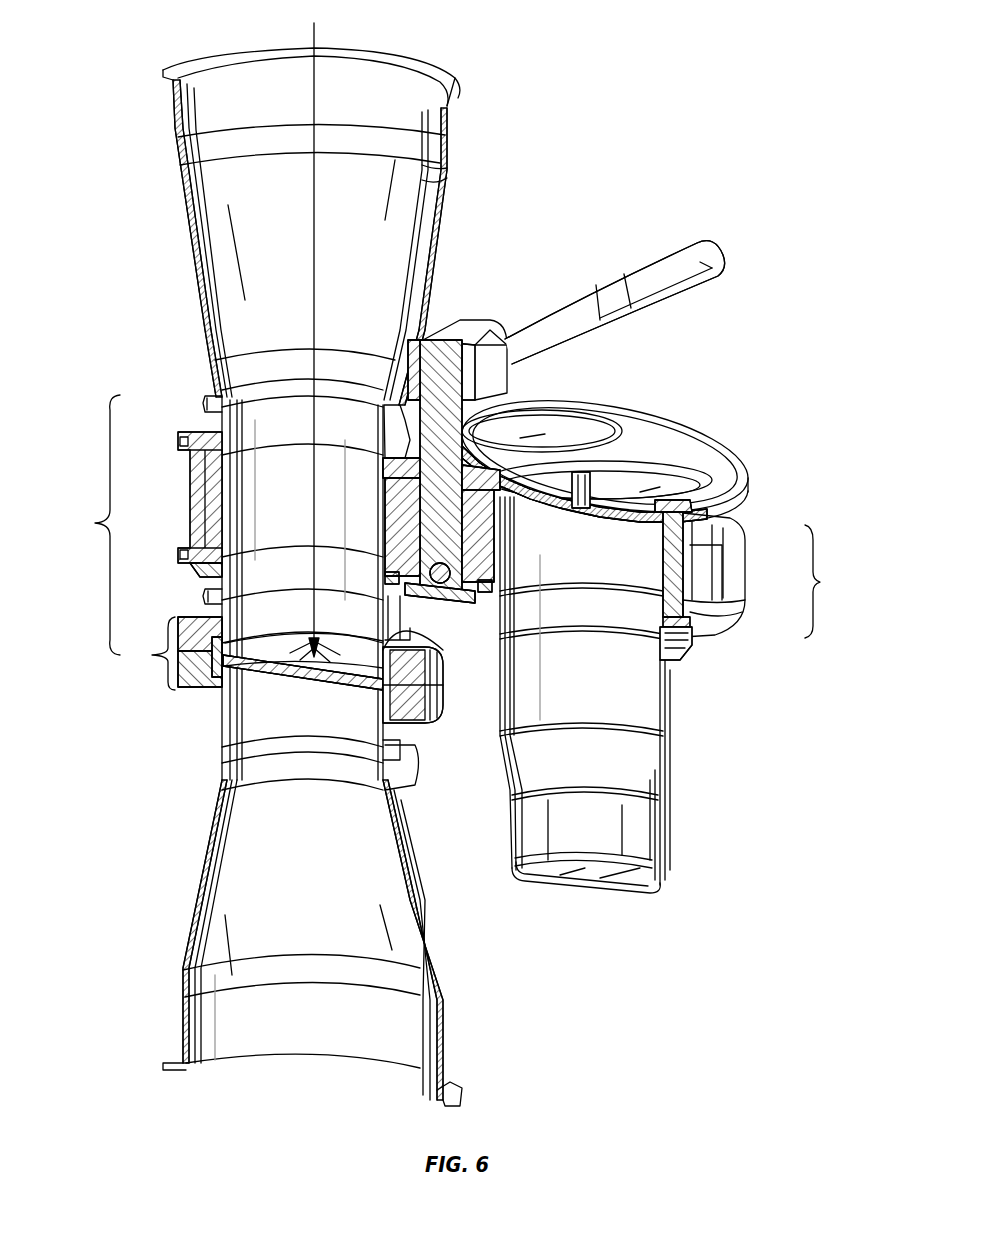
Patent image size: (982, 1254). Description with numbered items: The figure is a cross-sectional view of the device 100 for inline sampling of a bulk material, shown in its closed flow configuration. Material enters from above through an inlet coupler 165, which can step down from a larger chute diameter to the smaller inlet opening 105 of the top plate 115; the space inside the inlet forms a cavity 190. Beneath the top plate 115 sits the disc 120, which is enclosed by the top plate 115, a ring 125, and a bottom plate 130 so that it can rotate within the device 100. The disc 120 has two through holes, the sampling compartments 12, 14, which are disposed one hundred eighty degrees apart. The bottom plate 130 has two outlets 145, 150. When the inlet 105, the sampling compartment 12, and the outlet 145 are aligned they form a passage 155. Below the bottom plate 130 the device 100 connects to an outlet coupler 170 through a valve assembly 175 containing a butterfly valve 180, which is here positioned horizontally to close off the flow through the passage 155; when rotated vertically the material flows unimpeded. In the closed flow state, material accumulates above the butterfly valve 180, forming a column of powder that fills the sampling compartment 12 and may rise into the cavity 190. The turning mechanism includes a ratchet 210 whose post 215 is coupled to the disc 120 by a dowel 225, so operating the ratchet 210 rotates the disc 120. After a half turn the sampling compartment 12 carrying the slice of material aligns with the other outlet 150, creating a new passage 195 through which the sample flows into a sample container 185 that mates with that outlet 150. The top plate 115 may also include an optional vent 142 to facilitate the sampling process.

The device 100 is at (134, 52).
The inlet coupler 165 is at (175, 137).
The cavity 190 is at (295, 425).
The inlet opening 105 is at (207, 403).
The sampling compartment 12 is at (237, 507).
The passage 155 is at (87, 525).
The bottom plate 130 is at (190, 567).
The outlet 145 is at (207, 590).
The valve assembly 175 is at (239, 653).
The butterfly valve 180 is at (220, 682).
The outlet coupler 170 is at (203, 850).
The ratchet 210 is at (475, 320).
The post 215 is at (490, 408).
The vent 142 is at (581, 472).
The top plate 115 is at (672, 440).
The disc 120 is at (483, 513).
The ring 125 is at (722, 550).
The new passage 195 is at (769, 575).
The sampling compartment 14 is at (650, 572).
The outlet 150 is at (623, 610).
The sample container 185 is at (668, 782).
The dowel 225 is at (450, 613).